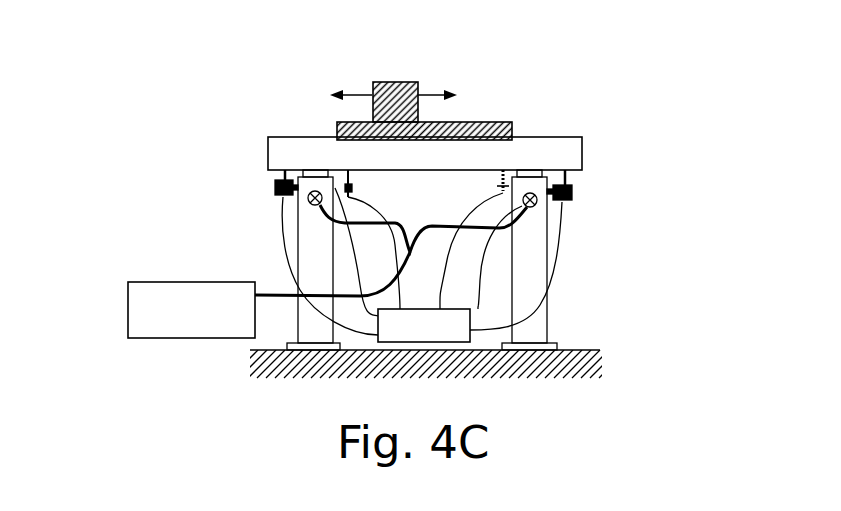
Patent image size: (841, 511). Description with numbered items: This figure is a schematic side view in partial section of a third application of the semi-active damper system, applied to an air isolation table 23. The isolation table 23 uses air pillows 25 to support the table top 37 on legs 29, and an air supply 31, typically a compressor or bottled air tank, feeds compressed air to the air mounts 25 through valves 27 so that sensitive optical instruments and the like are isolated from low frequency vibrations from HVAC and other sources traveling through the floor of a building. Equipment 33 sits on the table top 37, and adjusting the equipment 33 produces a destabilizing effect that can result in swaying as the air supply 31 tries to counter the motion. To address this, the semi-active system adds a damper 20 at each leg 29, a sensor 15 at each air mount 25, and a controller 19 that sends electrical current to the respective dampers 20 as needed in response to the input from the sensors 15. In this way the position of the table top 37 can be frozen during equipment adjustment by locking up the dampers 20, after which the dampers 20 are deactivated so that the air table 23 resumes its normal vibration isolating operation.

The sensor 15 is at (511, 171).
The controller 19 is at (417, 342).
The damper 20 is at (270, 188).
The isolation table 23 is at (590, 156).
The air pillow 25 is at (304, 173).
The valve 27 is at (541, 208).
The leg 29 is at (330, 252).
The air supply 31 is at (127, 322).
The equipment 33 is at (398, 82).
The table top 37 is at (303, 136).